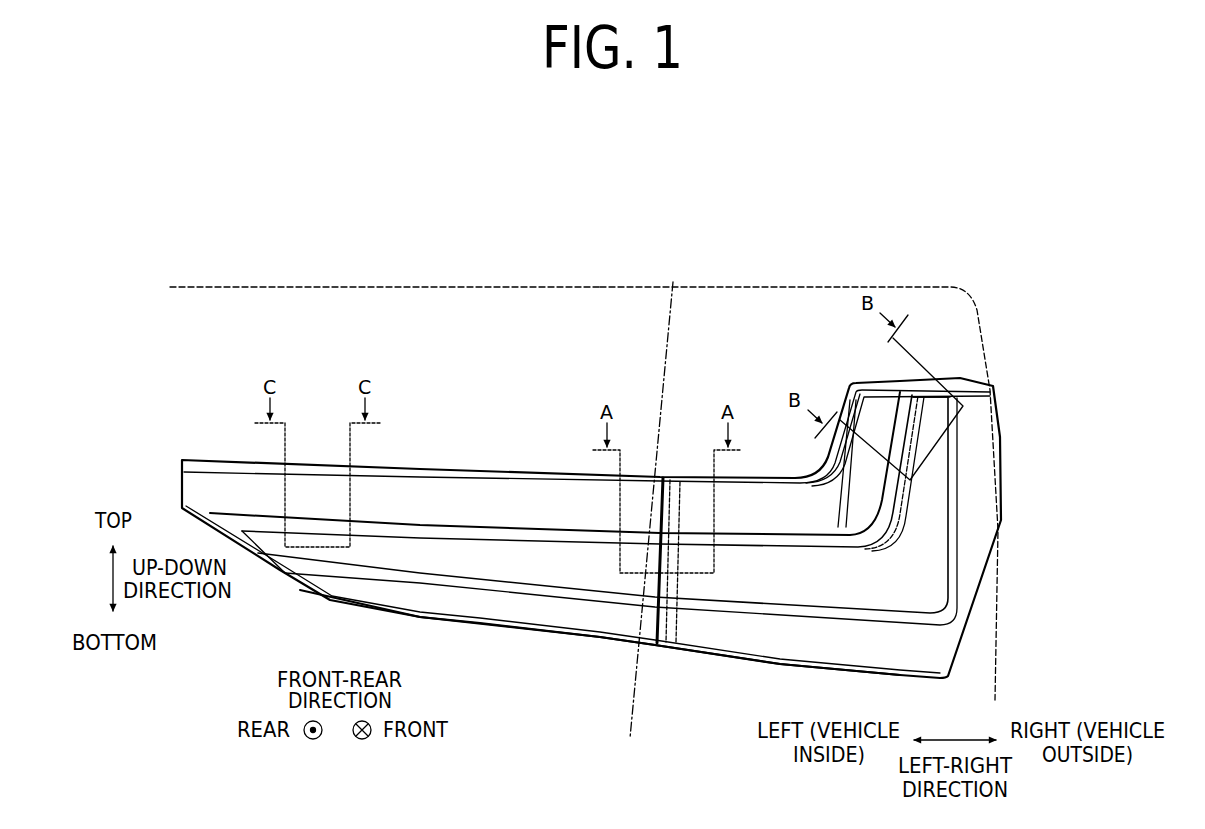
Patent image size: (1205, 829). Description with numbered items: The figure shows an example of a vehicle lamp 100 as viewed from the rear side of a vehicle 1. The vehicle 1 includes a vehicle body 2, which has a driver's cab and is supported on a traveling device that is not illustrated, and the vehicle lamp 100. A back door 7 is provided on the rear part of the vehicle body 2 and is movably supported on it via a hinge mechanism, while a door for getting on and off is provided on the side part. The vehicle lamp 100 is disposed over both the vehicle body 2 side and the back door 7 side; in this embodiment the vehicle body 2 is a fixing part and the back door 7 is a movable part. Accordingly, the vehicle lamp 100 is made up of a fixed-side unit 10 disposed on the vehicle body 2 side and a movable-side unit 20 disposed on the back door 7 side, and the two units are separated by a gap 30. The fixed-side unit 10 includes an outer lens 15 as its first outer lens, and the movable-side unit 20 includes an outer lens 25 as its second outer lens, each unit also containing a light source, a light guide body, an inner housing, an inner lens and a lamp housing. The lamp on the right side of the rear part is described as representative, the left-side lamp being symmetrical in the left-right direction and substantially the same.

The vehicle 1 is at (929, 282).
The vehicle body 2 is at (794, 305).
The back door 7 is at (560, 305).
The fixed-side unit 10 is at (989, 587).
The outer lens 15 is at (747, 646).
The movable-side unit 20 is at (518, 638).
The outer lens 25 is at (410, 600).
The gap 30 is at (662, 658).
The vehicle lamp 100 is at (966, 364).